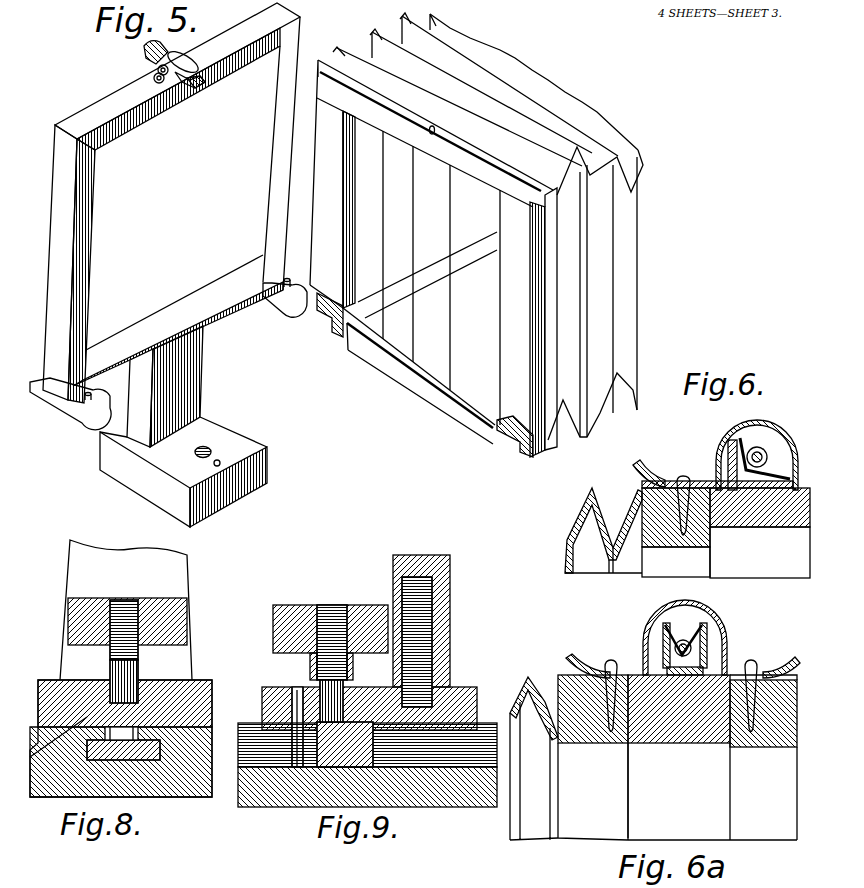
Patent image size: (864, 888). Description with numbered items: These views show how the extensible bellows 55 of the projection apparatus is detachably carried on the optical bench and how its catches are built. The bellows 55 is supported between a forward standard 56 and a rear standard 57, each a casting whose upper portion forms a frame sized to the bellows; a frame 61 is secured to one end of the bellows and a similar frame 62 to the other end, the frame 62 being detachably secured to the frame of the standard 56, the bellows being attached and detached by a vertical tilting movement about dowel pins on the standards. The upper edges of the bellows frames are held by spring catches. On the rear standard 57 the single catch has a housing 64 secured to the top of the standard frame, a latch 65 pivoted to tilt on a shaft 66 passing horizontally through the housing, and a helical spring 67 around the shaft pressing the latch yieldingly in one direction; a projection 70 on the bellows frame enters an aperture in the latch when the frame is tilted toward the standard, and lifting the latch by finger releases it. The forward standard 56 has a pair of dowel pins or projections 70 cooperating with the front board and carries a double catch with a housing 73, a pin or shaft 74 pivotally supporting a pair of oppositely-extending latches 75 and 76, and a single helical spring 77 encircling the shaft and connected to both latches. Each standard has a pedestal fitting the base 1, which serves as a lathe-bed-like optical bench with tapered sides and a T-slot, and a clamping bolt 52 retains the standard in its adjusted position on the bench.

In FIG. 8, the base 1 is at (190, 773).
In FIG. 9, the base 1 is at (287, 773).
In FIG. 8, the clamping bolt 52 is at (168, 628).
In FIG. 9, the clamping bolt 52 is at (297, 613).
In FIG. 5, the extensible bellows 55 is at (595, 402).
In FIG. 6, the extensible bellows 55 is at (597, 533).
In FIG. 6A, the extensible bellows 55 is at (550, 707).
In FIG. 5, the forward standard 56 is at (154, 105).
In FIG. 6, the forward standard 56 is at (717, 514).
In FIG. 6A, the forward standard 56 is at (683, 727).
In FIG. 9, the forward standard 56 is at (442, 623).
In FIG. 6, the rear standard 57 is at (777, 520).
In FIG. 6, the frame 61 is at (676, 562).
In FIG. 5, the frame 62 is at (440, 387).
In FIG. 6A, the frame 62 is at (593, 757).
In FIG. 6, the housing 64 is at (760, 425).
In FIG. 6, the latch 65 is at (645, 477).
In FIG. 6, the shaft 66 is at (763, 457).
In FIG. 6, the helical spring 67 is at (783, 473).
In FIG. 5, the projection 70 is at (78, 413).
In FIG. 5, the housing 73 is at (180, 55).
In FIG. 6A, the housing 73 is at (720, 627).
In FIG. 6A, the pin or shaft 74 is at (686, 642).
In FIG. 5, the latch 75 is at (190, 86).
In FIG. 6A, the latch 75 is at (777, 670).
In FIG. 5, the latch 76 is at (147, 55).
In FIG. 6A, the latch 76 is at (580, 663).
In FIG. 6A, the helical spring 77 is at (676, 605).